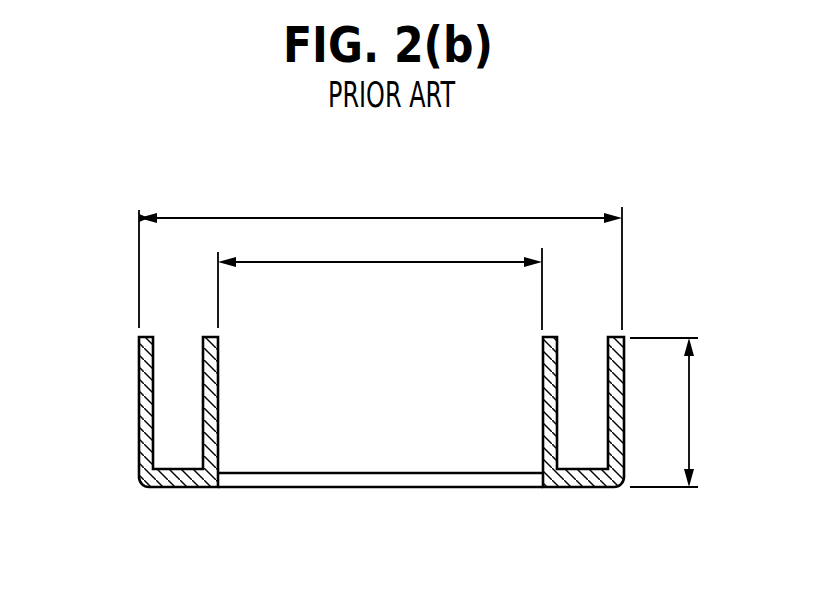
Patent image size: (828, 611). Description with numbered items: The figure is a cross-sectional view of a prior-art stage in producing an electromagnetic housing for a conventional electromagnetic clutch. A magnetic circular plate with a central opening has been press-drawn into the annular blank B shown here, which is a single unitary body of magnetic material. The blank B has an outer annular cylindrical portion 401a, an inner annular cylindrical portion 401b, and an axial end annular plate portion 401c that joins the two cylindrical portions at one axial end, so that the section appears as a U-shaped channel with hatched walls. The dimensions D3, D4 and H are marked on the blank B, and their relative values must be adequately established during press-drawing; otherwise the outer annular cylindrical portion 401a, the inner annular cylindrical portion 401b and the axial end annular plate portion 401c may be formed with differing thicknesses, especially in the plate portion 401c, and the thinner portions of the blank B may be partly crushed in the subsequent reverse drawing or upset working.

The annular blank B is at (139, 418).
The outer annular cylindrical portion 401a is at (140, 392).
The inner annular cylindrical portion 401b is at (218, 406).
The axial end annular plate portion 401c is at (180, 488).
The outer diameter dimension D3 is at (380, 257).
The inner diameter dimension D4 is at (380, 279).
The height dimension H is at (668, 412).